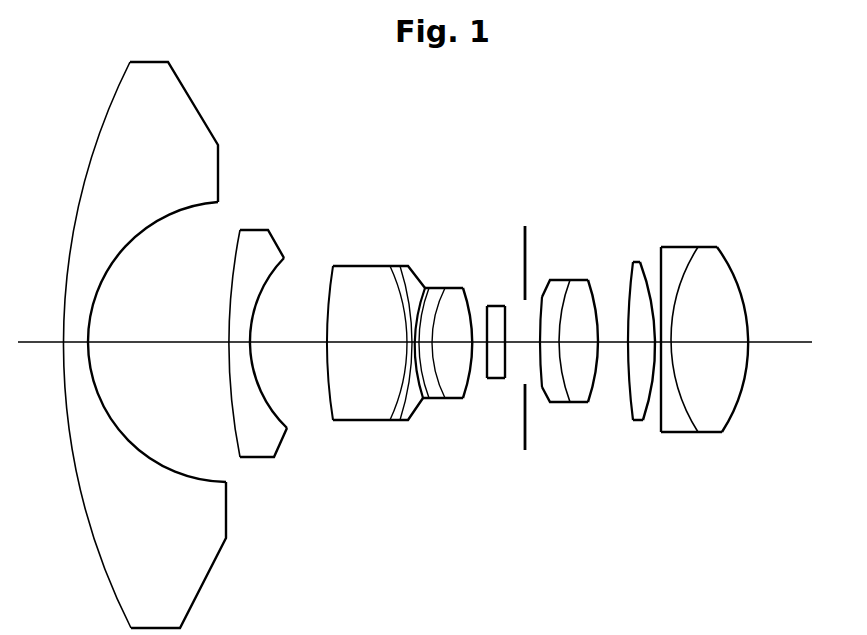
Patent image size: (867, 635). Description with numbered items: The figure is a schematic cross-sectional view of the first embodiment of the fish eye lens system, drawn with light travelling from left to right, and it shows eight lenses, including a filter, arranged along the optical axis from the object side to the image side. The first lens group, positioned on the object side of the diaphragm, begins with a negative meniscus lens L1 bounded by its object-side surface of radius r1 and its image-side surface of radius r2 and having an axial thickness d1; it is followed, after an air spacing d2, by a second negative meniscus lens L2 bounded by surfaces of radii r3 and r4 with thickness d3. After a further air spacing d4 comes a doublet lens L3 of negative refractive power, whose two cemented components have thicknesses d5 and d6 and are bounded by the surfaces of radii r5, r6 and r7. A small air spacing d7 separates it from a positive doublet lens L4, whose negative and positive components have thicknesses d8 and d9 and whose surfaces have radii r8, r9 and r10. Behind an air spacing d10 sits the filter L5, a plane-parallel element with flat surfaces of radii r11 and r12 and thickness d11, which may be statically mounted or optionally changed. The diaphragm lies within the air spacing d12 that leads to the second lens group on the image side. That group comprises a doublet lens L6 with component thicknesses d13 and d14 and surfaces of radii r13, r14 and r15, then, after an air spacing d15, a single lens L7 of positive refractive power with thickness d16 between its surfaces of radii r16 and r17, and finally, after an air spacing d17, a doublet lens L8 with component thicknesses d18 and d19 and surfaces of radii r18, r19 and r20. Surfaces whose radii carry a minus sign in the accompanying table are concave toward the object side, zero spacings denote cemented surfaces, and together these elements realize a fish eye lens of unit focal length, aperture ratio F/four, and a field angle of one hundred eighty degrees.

The negative meniscus lens L1 is at (217, 44).
The second negative meniscus lens L2 is at (281, 115).
The doublet lens L3 is at (420, 137).
The positive lens L4 is at (470, 152).
The filter L5 is at (502, 136).
The doublet lens L6 is at (595, 152).
The single lens L7 is at (653, 133).
The doublet lens L8 is at (745, 152).
The radius of curvature of first surface r1 is at (110, 587).
The radius of curvature of second surface r2 is at (177, 473).
The radius of curvature of third surface r3 is at (233, 440).
The radius of curvature of fourth surface r4 is at (283, 422).
The radius of curvature of fifth surface r5 is at (328, 405).
The radius of curvature of sixth surface r6 is at (397, 402).
The radius of curvature of seventh surface r7 is at (401, 422).
The radius of curvature of eighth surface r8 is at (432, 398).
The radius of curvature of ninth surface r9 is at (452, 400).
The radius of curvature of tenth surface r10 is at (466, 402).
The radius of curvature of eleventh surface r11 is at (483, 380).
The radius of curvature of twelfth surface r12 is at (510, 385).
The radius of curvature of thirteenth surface r13 is at (540, 405).
The radius of curvature of fourteenth surface r14 is at (565, 392).
The radius of curvature of fifteenth surface r15 is at (593, 390).
The radius of curvature of sixteenth surface r16 is at (630, 400).
The radius of curvature of seventeenth surface r17 is at (643, 420).
The radius of curvature of eighteenth surface r18 is at (658, 418).
The radius of curvature of nineteenth surface r19 is at (689, 420).
The radius of curvature of twentieth surface r20 is at (730, 418).
The axial thickness of first lens d1 is at (72, 342).
The axial air spacing d2 is at (157, 342).
The axial thickness of second lens d3 is at (233, 340).
The axial air spacing d4 is at (283, 342).
The axial thickness of first component of third lens d5 is at (367, 343).
The axial thickness of second component of third lens d6 is at (403, 266).
The axial air spacing d7 is at (424, 290).
The axial thickness of first component of fourth lens d8 is at (438, 305).
The axial thickness of second component of fourth lens d9 is at (454, 343).
The axial air spacing d10 is at (480, 342).
The axial thickness of filter d11 is at (494, 342).
The axial air spacing d12 is at (520, 342).
The axial thickness of first component of sixth lens d13 is at (543, 342).
The axial thickness of second component of sixth lens d14 is at (580, 342).
The axial air spacing d15 is at (607, 342).
The axial thickness of seventh lens d16 is at (630, 342).
The axial air spacing d17 is at (655, 342).
The axial thickness of first component of eighth lens d18 is at (663, 342).
The axial thickness of second component of eighth lens d19 is at (710, 342).